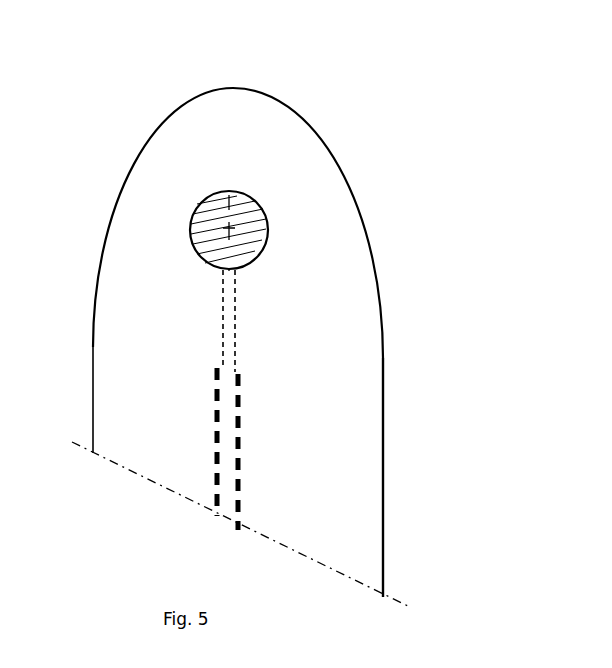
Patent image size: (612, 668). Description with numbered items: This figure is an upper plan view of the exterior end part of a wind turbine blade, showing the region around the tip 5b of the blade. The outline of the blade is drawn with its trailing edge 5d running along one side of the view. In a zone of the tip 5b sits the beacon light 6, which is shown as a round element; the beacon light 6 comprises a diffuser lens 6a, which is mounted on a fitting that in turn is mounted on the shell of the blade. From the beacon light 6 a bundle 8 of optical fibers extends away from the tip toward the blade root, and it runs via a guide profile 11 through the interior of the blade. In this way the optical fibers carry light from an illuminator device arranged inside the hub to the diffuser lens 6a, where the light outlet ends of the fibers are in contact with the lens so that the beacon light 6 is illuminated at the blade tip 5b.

The tip 5b is at (232, 89).
The trailing edge 5d is at (384, 398).
The beacon light 6 is at (258, 204).
The diffuser lens 6a is at (270, 229).
The bundle of optical fibers 8 is at (220, 182).
The guide profile 11 is at (233, 418).